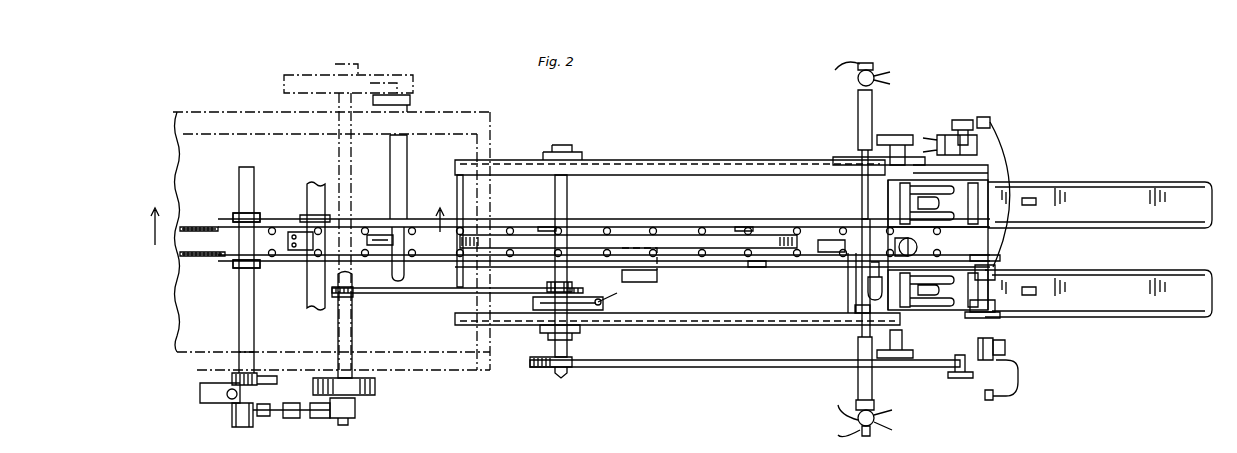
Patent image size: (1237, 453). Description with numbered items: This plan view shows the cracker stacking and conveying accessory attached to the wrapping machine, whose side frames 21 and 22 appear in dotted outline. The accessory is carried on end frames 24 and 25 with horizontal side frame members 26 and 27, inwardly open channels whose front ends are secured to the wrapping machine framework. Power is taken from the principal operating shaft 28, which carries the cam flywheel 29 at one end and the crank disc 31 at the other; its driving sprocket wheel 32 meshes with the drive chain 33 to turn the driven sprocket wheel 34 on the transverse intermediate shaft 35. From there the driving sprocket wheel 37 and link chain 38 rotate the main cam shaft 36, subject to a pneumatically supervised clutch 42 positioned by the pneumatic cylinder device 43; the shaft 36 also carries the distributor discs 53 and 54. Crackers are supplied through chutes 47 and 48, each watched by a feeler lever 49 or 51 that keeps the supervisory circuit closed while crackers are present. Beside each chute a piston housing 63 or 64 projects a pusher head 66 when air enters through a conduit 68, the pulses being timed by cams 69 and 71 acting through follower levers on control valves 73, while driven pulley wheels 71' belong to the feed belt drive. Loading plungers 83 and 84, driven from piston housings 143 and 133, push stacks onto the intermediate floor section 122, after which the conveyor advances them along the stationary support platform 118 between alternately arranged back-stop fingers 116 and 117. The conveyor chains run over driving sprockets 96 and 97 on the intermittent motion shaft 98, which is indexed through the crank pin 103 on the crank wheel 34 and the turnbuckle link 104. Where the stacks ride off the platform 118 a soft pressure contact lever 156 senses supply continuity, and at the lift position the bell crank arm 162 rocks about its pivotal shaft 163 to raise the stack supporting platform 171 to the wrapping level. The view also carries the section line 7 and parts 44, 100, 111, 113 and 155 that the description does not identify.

The section line 7- 7 is at (296, 215).
The side frame 21 is at (468, 376).
The side frame 22 is at (228, 112).
The end frame 24 is at (1007, 350).
The end frame 25 is at (975, 160).
The horizontal side frame member 26 is at (720, 325).
The horizontal side frame member 27 is at (708, 160).
The principal operating shaft 28 is at (338, 336).
The cam flywheel 29 is at (305, 74).
The crank disc 31 is at (378, 387).
The driving sprocket wheel 32 is at (353, 296).
The drive chain 33 is at (426, 294).
The driven sprocket wheel 34 is at (547, 286).
The transverse intermediate shaft 35 is at (568, 347).
The main cam shaft 36 is at (950, 135).
The driving sprocket wheel 37 is at (545, 372).
The sprocket fitting link chain 38 is at (728, 368).
The pneumatically supervised clutch 42 is at (612, 305).
The operating pneumatic cylinder device 43 is at (640, 275).
The link lever 44 is at (617, 292).
The chute 47 is at (1155, 312).
The chute 48 is at (1130, 188).
The feeler lever 49 is at (1036, 290).
The feeler lever 51 is at (1036, 200).
The distributor disc 53 is at (998, 312).
The distributor disc 54 is at (990, 195).
The pneumatic piston housing 63 is at (995, 350).
The pneumatic piston housing 64 is at (997, 266).
The pusher head 66 is at (1002, 256).
The conduit 68 is at (1002, 130).
The cam 69 is at (960, 379).
The cam 71 is at (929, 240).
The driven pulley wheel 71' is at (896, 130).
The control valve 73 is at (987, 118).
The plunger 83 is at (855, 311).
The plunger 84 is at (866, 280).
The driving sprocket 96 is at (230, 264).
The driving sprocket 97 is at (233, 214).
The intermittent motion shaft 98 is at (239, 299).
The post 100 is at (465, 190).
The crank pin 103 is at (345, 425).
The turnbuckle link 104 is at (298, 420).
The drive unit 111 is at (275, 393).
The guide plate 113 is at (205, 226).
The back-stop fingers 116 is at (756, 268).
The back-stop fingers 117 is at (545, 226).
The stationary support platform 118 is at (735, 250).
The intermediate floor section 122 is at (818, 240).
The piston housing 133 is at (858, 116).
The piston housing 143 is at (858, 385).
The hook 155 is at (408, 266).
The soft pressure contact lever 156 is at (378, 235).
The bell crank arm 162 is at (412, 100).
The pivotal shaft 163 is at (390, 151).
The stack supporting platform 171 is at (310, 214).